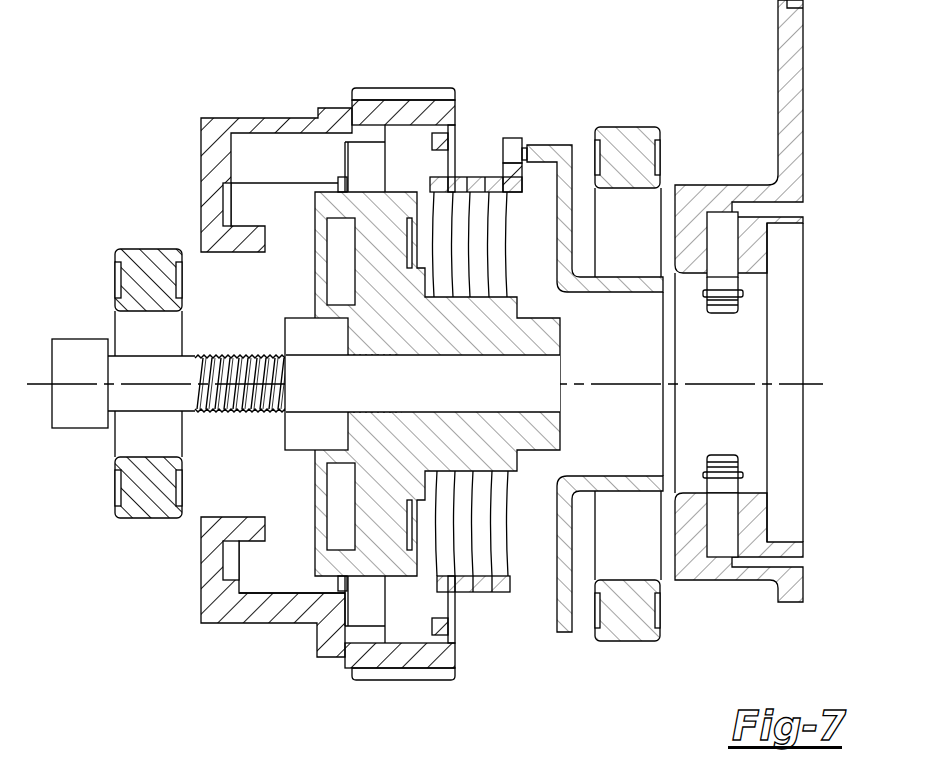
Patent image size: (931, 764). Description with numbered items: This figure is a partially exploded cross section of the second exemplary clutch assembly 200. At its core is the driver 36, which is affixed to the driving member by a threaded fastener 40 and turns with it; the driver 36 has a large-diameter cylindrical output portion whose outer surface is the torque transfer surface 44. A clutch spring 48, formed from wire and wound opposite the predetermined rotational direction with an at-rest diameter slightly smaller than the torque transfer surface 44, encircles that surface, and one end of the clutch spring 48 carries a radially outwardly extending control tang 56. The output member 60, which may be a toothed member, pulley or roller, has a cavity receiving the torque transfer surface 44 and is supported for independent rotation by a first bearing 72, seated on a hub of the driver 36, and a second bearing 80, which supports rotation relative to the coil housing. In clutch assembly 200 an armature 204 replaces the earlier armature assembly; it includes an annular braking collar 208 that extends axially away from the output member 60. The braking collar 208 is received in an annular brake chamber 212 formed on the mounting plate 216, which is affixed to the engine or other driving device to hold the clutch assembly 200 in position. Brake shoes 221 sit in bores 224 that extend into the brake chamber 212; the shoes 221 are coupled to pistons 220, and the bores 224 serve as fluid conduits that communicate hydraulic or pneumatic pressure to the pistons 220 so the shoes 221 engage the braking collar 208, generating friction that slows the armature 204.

The clutch assembly 200 is at (150, 90).
The driver 36 is at (383, 282).
The threaded fastener 40 is at (68, 430).
The torque transfer surface 44 is at (365, 192).
The clutch spring 48 is at (477, 592).
The control tang 56 is at (508, 138).
The output member 60 is at (262, 615).
The first bearing 72 is at (142, 255).
The second bearing 80 is at (640, 625).
The armature 204 is at (542, 150).
The annular braking collar 208 is at (597, 285).
The annular brake chamber 212 is at (755, 320).
The mounting plate 216 is at (783, 52).
The piston 220 is at (733, 465).
The brake shoe 221 is at (717, 313).
The bore 224 is at (730, 530).